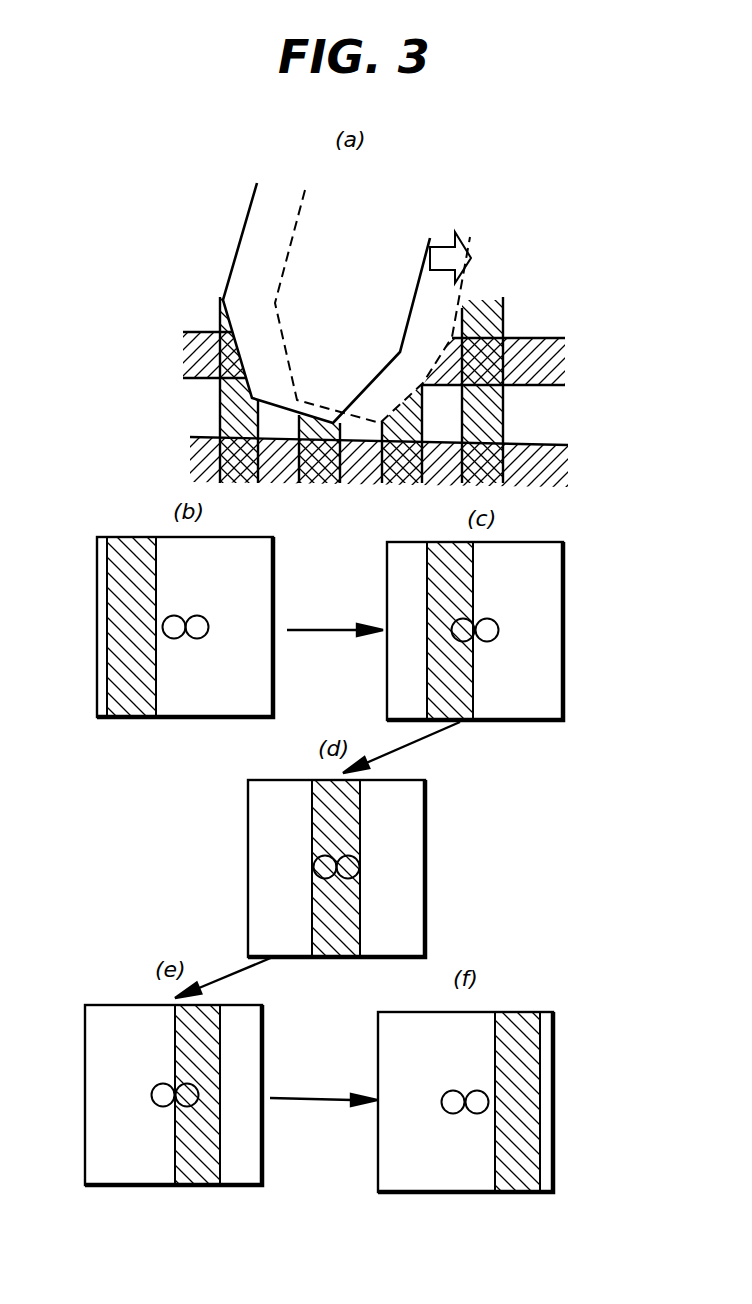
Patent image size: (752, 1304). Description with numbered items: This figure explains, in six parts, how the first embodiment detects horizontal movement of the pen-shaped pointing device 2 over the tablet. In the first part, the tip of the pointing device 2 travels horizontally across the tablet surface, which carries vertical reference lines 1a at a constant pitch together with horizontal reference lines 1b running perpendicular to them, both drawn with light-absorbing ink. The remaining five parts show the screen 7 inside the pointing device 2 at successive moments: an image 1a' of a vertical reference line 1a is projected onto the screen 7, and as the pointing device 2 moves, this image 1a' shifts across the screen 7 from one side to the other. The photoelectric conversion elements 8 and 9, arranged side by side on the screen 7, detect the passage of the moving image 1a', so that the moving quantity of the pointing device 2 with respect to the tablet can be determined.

The pointing device 2 is at (240, 239).
The reference lines 1a is at (390, 371).
The reference lines 1b is at (547, 443).
The screen 7 is at (275, 603).
The photoelectric conversion element 8 is at (177, 615).
The photoelectric conversion element 9 is at (200, 617).
The image of the vertical reference line 1a' is at (324, 864).